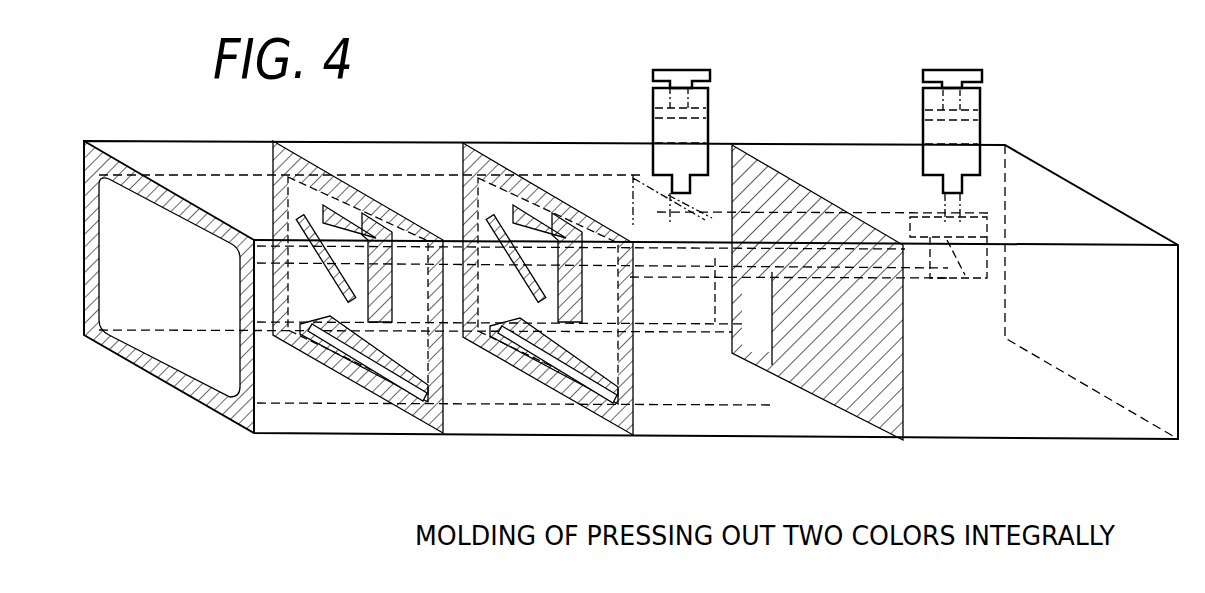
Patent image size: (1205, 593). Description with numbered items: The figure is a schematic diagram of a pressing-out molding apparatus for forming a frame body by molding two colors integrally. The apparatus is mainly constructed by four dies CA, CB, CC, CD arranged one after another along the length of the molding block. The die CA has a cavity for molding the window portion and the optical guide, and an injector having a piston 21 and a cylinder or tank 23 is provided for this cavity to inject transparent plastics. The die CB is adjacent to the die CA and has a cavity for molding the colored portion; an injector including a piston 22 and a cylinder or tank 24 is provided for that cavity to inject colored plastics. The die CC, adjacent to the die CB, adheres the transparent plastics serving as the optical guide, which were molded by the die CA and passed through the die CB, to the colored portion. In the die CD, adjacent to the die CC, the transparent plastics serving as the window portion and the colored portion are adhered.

The piston 21 is at (953, 72).
The piston 22 is at (693, 71).
The cylinder (tank) 23 is at (981, 131).
The cylinder (tank) 24 is at (708, 122).
The die CA is at (1060, 420).
The die CB is at (808, 420).
The die CC is at (553, 420).
The die CD is at (358, 420).